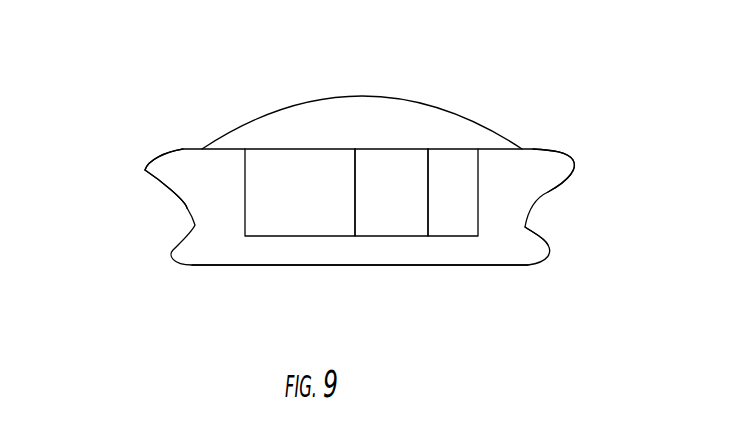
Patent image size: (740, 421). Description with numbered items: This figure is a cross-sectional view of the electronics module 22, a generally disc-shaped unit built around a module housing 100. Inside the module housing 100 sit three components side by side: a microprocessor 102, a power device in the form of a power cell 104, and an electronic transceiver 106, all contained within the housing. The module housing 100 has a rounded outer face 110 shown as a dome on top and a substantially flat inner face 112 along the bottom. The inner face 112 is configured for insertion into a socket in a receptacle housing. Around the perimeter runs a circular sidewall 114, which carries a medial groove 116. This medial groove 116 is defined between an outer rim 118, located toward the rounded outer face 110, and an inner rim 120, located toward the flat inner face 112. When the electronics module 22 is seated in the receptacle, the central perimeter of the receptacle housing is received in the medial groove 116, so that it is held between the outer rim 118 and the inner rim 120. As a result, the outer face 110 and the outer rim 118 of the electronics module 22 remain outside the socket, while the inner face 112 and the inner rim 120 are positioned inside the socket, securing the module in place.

The electronics module 22 is at (256, 103).
The module housing 100 is at (182, 165).
The microprocessor 102 is at (292, 205).
The power cell 104 is at (398, 202).
The electronic transceiver 106 is at (460, 212).
The rounded outer face 110 is at (403, 120).
The inner face 112 is at (233, 271).
The circular sidewall 114 is at (145, 170).
The medial groove 116 is at (187, 208).
The outer rim 118 is at (573, 160).
The inner rim 120 is at (548, 245).